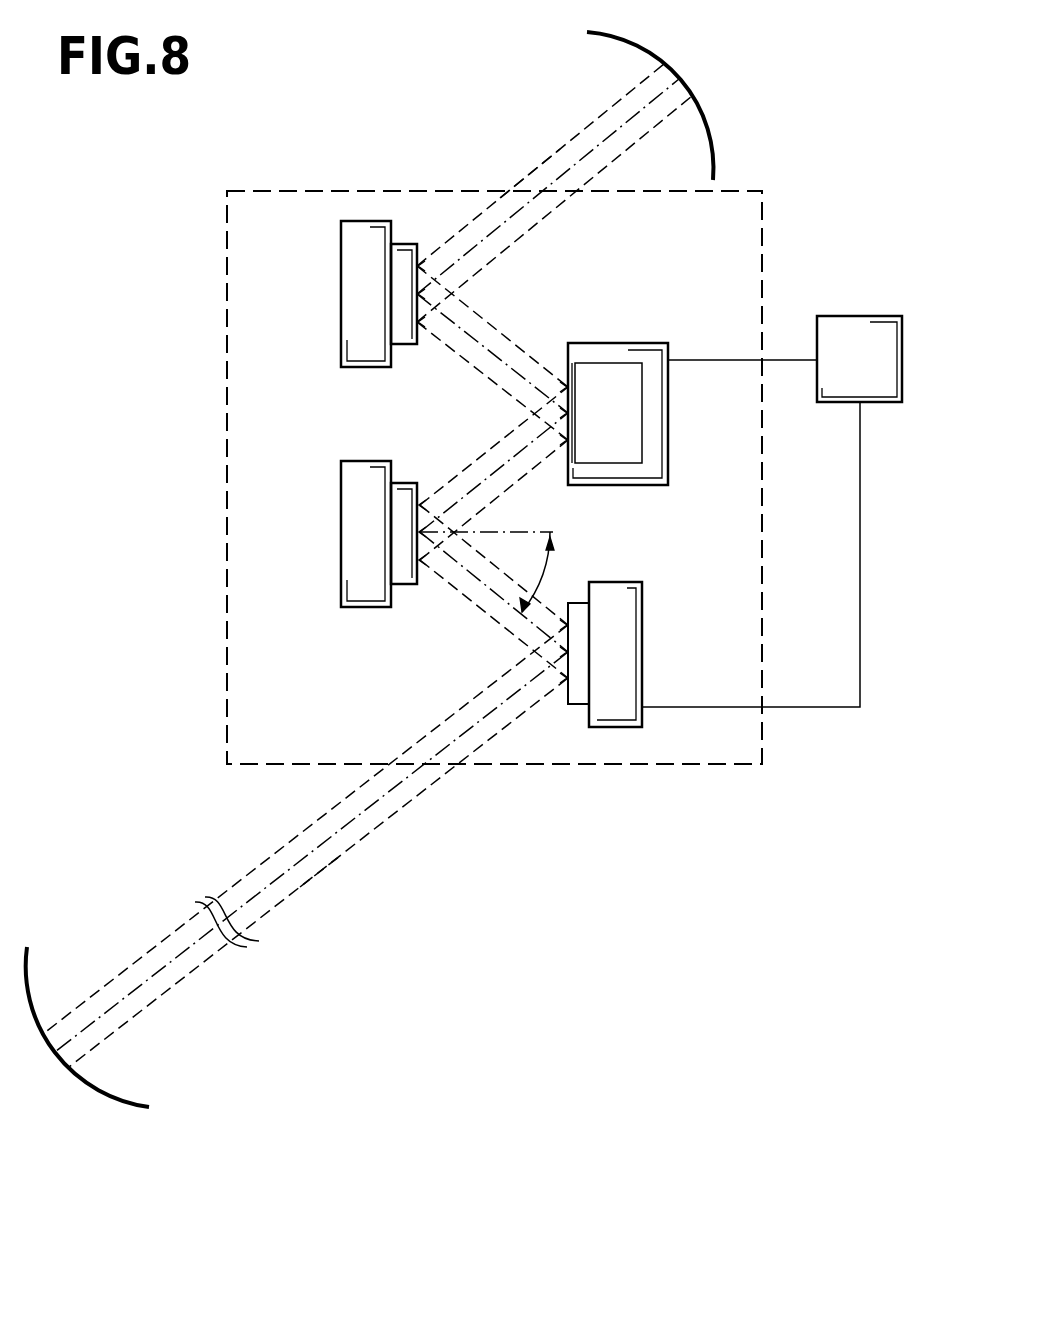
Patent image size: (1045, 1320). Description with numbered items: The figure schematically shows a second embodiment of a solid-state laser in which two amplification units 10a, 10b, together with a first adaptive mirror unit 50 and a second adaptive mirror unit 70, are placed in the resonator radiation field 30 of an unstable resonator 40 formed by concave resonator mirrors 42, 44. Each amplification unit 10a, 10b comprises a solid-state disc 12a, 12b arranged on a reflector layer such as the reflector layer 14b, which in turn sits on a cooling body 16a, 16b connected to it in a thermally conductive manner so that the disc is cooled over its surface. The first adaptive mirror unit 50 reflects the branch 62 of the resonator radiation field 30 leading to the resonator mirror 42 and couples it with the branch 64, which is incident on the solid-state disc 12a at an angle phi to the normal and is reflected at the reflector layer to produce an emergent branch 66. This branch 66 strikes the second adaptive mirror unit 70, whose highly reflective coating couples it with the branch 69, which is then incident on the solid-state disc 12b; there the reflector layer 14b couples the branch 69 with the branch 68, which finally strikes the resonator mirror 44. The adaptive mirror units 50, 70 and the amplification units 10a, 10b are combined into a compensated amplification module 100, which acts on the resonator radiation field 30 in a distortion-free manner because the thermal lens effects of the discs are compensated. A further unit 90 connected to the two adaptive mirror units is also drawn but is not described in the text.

The amplification unit 10a is at (355, 489).
The amplification unit 10b is at (355, 248).
The solid-state disc 12a is at (405, 572).
The solid-state disc 12b is at (405, 335).
The reflector layer 14b is at (411, 243).
The cooling body 16a is at (355, 551).
The cooling body 16b is at (355, 311).
The resonator radiation field 30 is at (346, 867).
The resonator 40 is at (555, 153).
The resonator mirror 42 is at (106, 1102).
The resonator mirror 44 is at (714, 135).
The first adaptive mirror unit 50 is at (620, 653).
The branch of the resonator radiation field 62 is at (244, 893).
The branch of the resonator radiation field 64 is at (487, 603).
The branch of the resonator radiation field 66 is at (503, 478).
The branch of the resonator radiation field 68 is at (532, 217).
The branch of the resonator radiation field 69 is at (510, 345).
The second adaptive mirror unit 70 is at (646, 352).
The control unit 90 is at (856, 337).
The compensated amplification module 100 is at (243, 685).